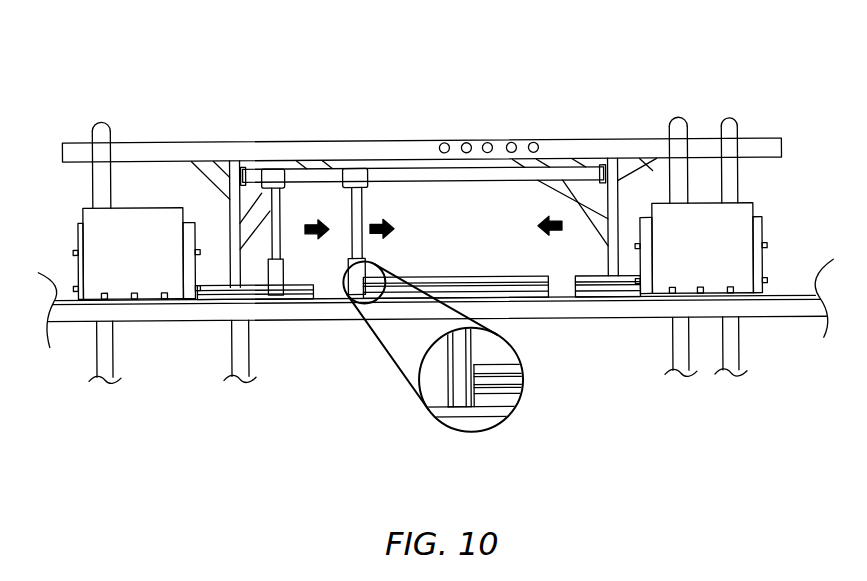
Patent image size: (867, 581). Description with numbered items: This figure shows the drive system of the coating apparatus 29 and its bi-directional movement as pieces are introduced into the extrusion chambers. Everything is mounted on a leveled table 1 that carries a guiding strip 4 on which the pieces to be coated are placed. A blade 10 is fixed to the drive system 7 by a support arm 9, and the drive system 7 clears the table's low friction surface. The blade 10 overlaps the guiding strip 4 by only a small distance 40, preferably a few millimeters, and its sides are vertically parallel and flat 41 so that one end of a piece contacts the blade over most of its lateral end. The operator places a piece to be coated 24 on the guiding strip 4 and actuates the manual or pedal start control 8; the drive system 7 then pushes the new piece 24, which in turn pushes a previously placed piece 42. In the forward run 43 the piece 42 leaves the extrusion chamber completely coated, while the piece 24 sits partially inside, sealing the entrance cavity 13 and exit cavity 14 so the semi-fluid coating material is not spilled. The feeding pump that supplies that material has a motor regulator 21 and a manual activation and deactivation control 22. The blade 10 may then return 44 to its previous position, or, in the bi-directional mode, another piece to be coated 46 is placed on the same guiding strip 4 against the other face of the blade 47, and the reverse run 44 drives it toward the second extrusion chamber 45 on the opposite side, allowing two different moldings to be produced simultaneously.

The leveled table 1 is at (782, 309).
The guiding strip 4 is at (490, 420).
The drive system 7 is at (382, 173).
The starter control for the drive system 8 is at (445, 142).
The support arm 9 is at (356, 208).
The blade 10 is at (284, 276).
The entrance cavity 13 is at (637, 222).
The exit cavity 14 is at (762, 224).
The feeding pump motor regulator 21 is at (488, 142).
The manual activation/deactivation control for pump 22 is at (467, 142).
The piece to be coated 24 is at (434, 277).
The apparatus 29 is at (596, 139).
The small distance 40 is at (445, 401).
The flat side of the blade 41 is at (470, 386).
The previously placed piece 42 is at (598, 286).
The run 43 is at (390, 221).
The return run in reverse sense 44 is at (548, 220).
The second extrusion chamber 45 is at (165, 206).
The other piece to be coated 46 is at (215, 290).
The other face of the blade 47 is at (272, 276).